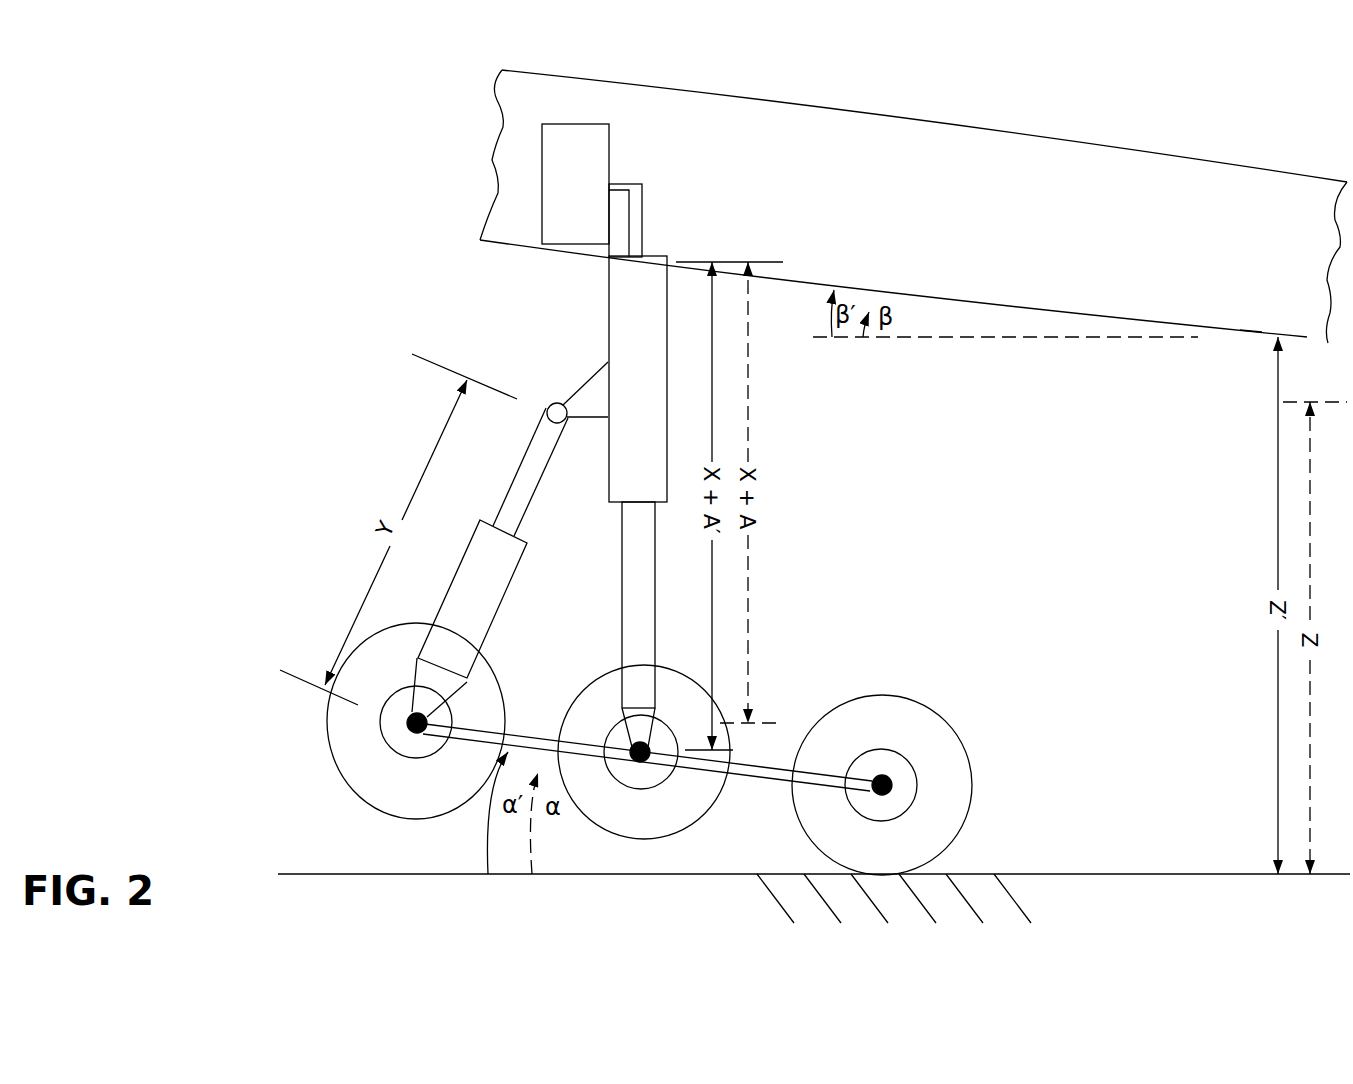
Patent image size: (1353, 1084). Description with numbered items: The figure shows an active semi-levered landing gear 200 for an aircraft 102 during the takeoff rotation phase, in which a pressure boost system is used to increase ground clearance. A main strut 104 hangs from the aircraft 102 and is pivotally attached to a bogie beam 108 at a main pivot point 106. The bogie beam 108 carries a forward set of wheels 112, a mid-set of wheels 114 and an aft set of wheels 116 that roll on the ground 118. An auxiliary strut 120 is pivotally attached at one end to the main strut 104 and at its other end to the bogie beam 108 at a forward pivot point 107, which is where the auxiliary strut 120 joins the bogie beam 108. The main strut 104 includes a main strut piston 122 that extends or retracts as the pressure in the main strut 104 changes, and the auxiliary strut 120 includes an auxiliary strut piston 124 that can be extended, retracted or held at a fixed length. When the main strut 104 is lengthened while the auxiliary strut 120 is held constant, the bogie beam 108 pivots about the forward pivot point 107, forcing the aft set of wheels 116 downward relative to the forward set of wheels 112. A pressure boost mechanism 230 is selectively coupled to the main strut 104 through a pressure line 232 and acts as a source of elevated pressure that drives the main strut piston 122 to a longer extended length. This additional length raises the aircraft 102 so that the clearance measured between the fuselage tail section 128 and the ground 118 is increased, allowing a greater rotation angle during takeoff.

The aircraft 102 is at (1248, 155).
The main strut 104 is at (598, 318).
The main pivot point 106 is at (632, 765).
The forward pivot point 107 is at (405, 732).
The bogie beam 108 is at (785, 758).
The forward set of wheels 112 is at (323, 735).
The mid-set of wheels 114 is at (734, 792).
The aft set of wheels 116 is at (953, 712).
The ground 118 is at (987, 860).
The auxiliary strut 120 is at (526, 560).
The main strut piston 122 is at (621, 600).
The auxiliary strut piston 124 is at (530, 442).
The fuselage tail section 128 is at (1250, 337).
The active semi-levered landing gear 200 is at (458, 318).
The pressure boost mechanism 230 is at (610, 167).
The pressure line 232 is at (643, 215).